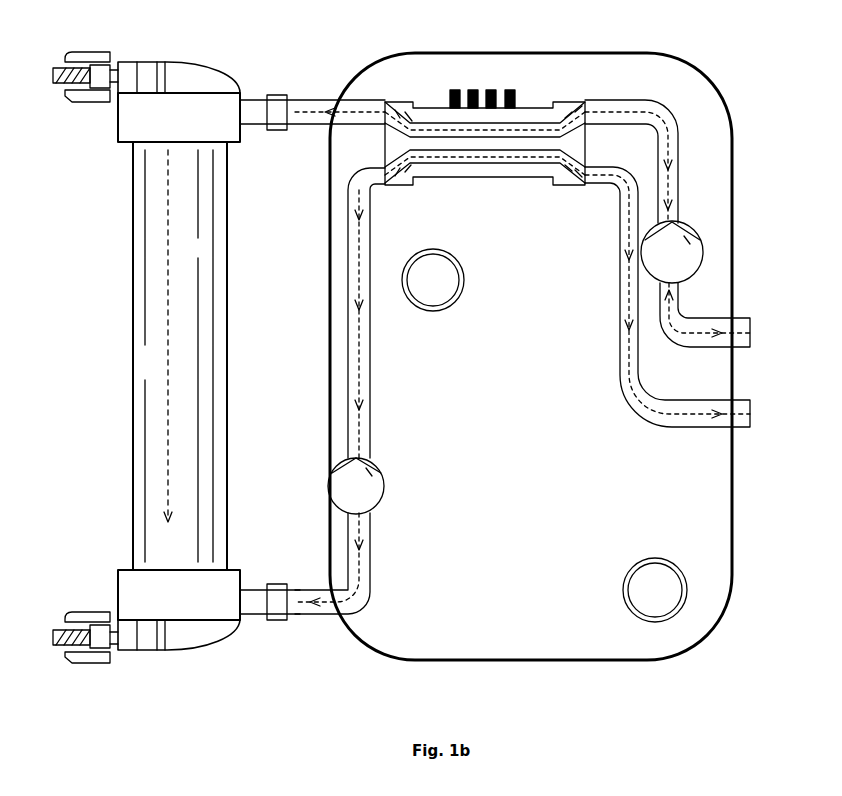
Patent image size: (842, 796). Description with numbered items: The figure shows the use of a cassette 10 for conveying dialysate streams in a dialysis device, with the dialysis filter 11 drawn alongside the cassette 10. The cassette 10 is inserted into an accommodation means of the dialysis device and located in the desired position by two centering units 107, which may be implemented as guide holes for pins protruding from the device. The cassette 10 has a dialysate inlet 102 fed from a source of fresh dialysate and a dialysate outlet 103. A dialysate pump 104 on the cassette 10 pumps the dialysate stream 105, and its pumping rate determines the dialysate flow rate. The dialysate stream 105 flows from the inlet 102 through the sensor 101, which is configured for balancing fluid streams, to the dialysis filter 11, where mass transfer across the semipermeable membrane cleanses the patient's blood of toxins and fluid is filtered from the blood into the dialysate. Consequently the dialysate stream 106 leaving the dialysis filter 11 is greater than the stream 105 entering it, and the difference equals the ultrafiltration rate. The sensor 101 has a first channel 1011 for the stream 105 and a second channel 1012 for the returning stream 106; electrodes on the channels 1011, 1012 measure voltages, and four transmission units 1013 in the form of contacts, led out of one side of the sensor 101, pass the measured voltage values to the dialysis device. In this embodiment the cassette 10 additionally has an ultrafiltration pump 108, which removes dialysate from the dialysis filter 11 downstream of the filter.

The cassette 10 is at (460, 52).
The dialysis filter 11 is at (183, 170).
The sensor 101 is at (437, 180).
The first channel 1011 is at (533, 122).
The second channel 1012 is at (500, 165).
The transmission units (contacts) 1013 is at (528, 92).
The dialysate inlet 102 is at (750, 320).
The dialysate outlet 103 is at (747, 413).
The dialysate pump 104 is at (686, 245).
The dialysate stream 105 is at (677, 103).
The dialysate stream 106 is at (363, 222).
The centering units 107 is at (427, 292).
The ultrafiltration pump 108 is at (387, 478).